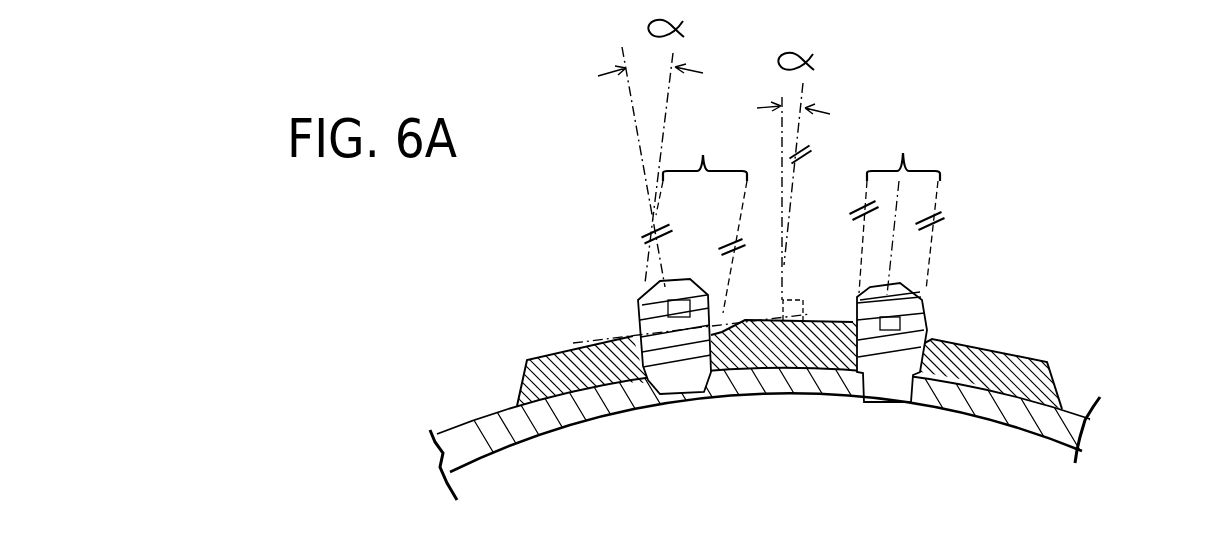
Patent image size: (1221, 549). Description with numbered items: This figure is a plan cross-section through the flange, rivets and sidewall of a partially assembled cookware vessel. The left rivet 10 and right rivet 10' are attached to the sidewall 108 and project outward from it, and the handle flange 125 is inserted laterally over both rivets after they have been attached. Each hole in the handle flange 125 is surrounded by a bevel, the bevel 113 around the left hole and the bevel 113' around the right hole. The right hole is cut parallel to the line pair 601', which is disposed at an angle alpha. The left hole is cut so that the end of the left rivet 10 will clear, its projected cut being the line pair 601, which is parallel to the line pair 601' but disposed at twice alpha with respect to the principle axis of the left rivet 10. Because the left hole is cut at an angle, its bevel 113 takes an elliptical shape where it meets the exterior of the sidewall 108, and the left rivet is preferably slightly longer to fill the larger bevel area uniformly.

The left rivet 10 is at (675, 377).
The right rivet 10' is at (892, 396).
The sidewall 108 is at (568, 403).
The bevel 113 is at (615, 301).
The bevel 113' is at (958, 293).
The handle flange 125 is at (523, 377).
The line pair 601 is at (673, 157).
The line pair 601' is at (907, 192).